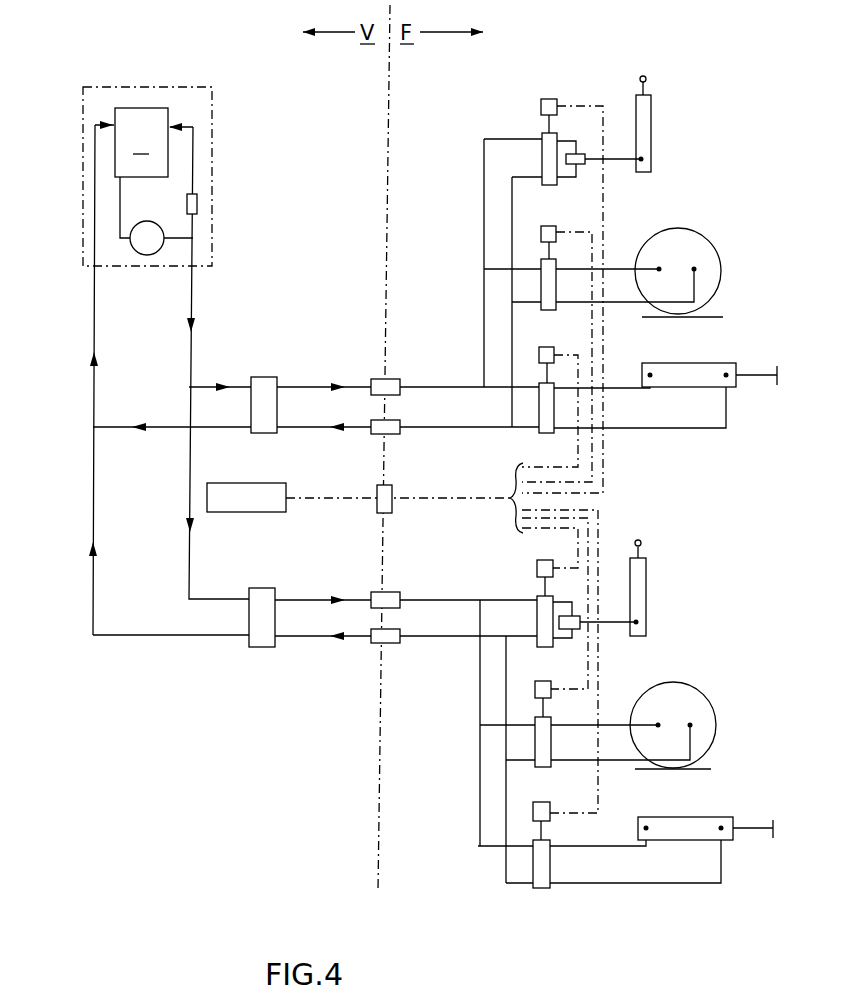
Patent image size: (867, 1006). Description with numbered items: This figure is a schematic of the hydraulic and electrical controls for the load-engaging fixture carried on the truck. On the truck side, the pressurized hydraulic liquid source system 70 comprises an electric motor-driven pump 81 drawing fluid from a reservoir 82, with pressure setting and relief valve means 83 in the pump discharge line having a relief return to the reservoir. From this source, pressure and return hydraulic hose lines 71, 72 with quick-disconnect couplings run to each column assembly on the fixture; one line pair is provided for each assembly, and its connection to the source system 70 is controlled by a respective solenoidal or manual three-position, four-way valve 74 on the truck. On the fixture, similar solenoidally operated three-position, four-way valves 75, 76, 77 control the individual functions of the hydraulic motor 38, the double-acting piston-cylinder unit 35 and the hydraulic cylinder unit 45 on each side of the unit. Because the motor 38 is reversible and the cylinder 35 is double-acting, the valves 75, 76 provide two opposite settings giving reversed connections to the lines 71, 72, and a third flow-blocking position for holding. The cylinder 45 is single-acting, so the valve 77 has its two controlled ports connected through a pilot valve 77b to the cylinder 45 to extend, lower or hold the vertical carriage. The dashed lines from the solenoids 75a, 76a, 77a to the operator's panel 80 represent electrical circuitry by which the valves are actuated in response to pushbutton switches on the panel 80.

The pressurized hydraulic liquid source system 70 is at (176, 84).
The pump 81 is at (148, 256).
The reservoir 82 is at (115, 117).
The pressure setting and relief valve means 83 is at (197, 205).
The three-position, four-way valve 74 is at (264, 377).
The pressure hydraulic hose line 71 is at (428, 382).
The return hydraulic hose line 72 is at (431, 432).
The operator's panel 80 is at (268, 515).
The three-position, four-way valve 77 is at (552, 183).
The solenoid 77a is at (510, 572).
The pilot valve 77b is at (578, 156).
The three-position, four-way valve 75 is at (546, 312).
The solenoid 75a is at (556, 228).
The three-position, four-way valve 76 is at (546, 436).
The solenoid 76a is at (556, 350).
The hydraulic cylinder unit 45 is at (652, 130).
The hydraulic motor 38 is at (720, 262).
The double-acting piston-cylinder unit 35 is at (674, 363).